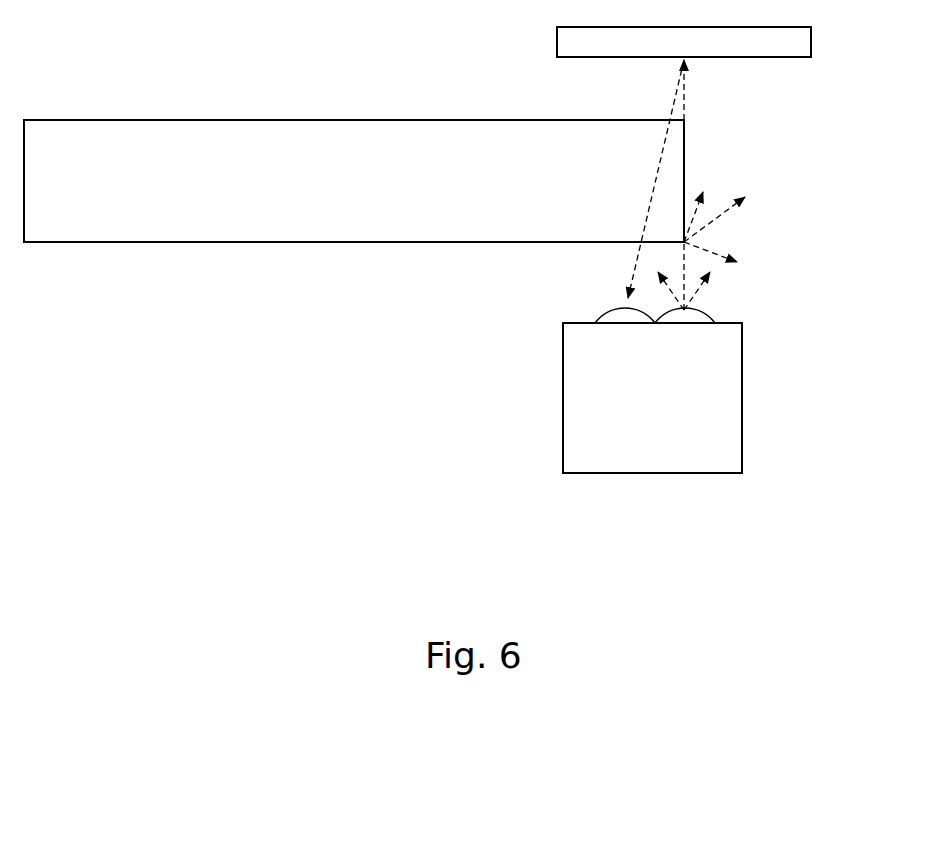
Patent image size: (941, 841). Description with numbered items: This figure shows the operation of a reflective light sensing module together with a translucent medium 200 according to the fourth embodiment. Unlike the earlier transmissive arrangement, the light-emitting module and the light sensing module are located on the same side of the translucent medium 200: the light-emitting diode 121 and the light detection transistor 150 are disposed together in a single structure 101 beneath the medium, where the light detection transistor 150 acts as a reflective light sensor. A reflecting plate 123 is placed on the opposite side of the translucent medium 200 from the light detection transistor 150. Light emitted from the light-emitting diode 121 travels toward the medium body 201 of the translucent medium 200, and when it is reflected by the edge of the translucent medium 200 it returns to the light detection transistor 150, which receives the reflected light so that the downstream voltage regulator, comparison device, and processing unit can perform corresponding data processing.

The translucent medium 200 is at (411, 133).
The medium body 201 is at (685, 158).
The reflecting plate 123 is at (800, 45).
The light detection transistor 150 is at (607, 318).
The light-emitting diode 121 is at (703, 318).
The structure 101 is at (726, 395).